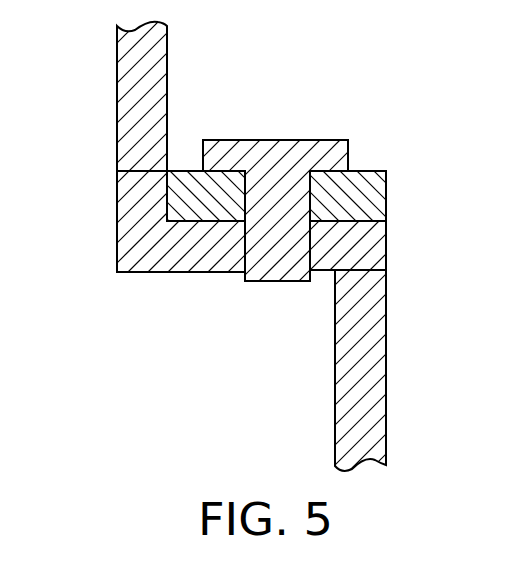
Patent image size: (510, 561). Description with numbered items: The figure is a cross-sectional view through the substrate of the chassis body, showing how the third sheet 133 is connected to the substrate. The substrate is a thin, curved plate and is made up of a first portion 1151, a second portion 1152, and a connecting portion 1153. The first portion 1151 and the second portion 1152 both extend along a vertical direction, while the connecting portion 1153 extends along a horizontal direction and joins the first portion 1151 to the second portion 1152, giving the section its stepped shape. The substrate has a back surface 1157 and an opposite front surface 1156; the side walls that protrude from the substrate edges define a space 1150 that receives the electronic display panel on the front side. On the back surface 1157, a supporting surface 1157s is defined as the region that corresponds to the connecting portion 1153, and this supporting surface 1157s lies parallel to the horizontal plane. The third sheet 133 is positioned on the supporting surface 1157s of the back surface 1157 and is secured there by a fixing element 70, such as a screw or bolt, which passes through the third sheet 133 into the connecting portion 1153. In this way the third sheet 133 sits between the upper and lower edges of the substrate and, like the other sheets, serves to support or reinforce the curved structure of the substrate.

The space 1150 is at (240, 368).
The first portion 1151 is at (118, 103).
The connecting portion 1153 is at (204, 262).
The fixing element 70 is at (258, 150).
The supporting surface 1157s is at (352, 213).
The third sheet 133 is at (386, 193).
The second portion 1152 is at (386, 367).
The back surface 1157 is at (335, 430).
The front surface 1156 is at (386, 430).